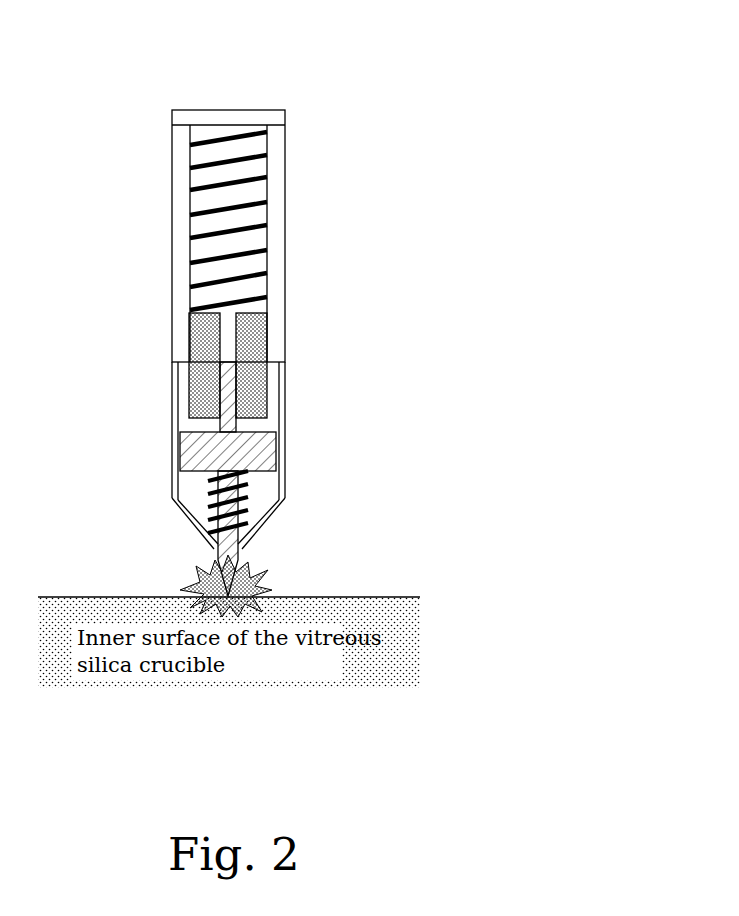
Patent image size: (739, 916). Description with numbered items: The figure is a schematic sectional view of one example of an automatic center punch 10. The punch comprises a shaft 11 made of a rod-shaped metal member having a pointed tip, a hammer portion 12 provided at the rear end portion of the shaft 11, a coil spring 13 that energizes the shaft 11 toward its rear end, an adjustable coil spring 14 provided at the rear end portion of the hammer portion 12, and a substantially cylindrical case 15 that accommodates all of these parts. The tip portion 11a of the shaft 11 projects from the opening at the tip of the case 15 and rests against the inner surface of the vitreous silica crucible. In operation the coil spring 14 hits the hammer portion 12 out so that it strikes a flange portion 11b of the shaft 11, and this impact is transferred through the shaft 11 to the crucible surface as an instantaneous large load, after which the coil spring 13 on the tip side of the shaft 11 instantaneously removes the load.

The automatic center punch 10 is at (304, 47).
The shaft 11 is at (215, 546).
The tip portion 11a is at (197, 586).
The flange portion 11b is at (278, 448).
The hammer portion 12 is at (189, 330).
The coil spring 13 is at (208, 492).
The coil spring 14 is at (203, 188).
The case 15 is at (176, 142).